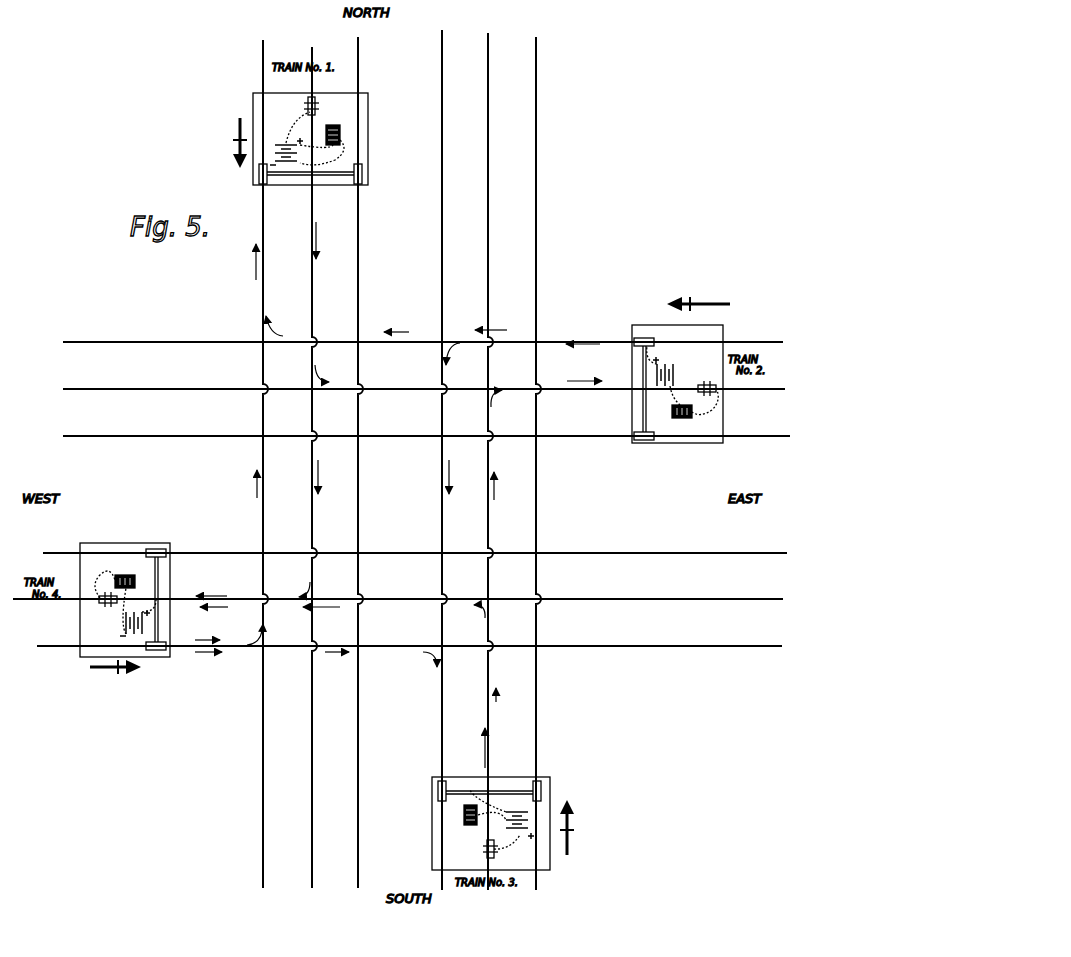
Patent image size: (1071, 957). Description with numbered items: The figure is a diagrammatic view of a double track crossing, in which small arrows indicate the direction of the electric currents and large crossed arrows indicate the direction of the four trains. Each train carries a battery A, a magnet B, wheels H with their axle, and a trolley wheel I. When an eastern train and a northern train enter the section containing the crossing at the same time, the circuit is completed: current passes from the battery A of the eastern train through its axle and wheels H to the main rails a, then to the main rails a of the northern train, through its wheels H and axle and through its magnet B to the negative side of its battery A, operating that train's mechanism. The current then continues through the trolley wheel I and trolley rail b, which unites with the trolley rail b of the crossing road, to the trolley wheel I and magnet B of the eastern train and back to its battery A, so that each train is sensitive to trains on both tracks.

The main rails a is at (413, 462).
The trolley rail b is at (399, 462).
The battery A is at (403, 479).
The magnet B is at (404, 481).
The wheels H is at (400, 485).
The trolley wheel I is at (403, 476).